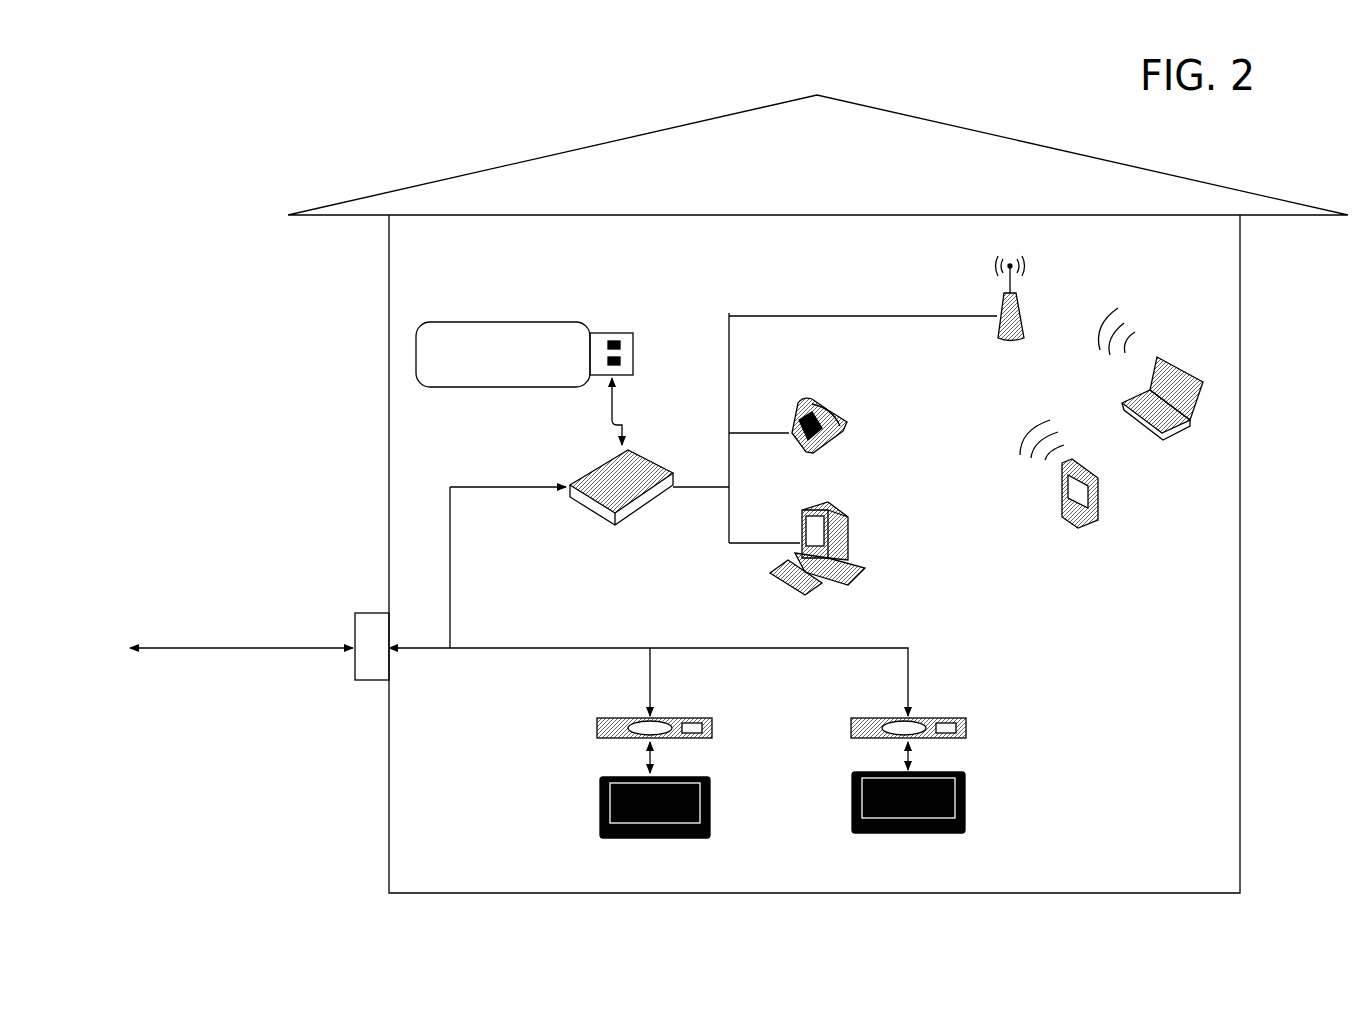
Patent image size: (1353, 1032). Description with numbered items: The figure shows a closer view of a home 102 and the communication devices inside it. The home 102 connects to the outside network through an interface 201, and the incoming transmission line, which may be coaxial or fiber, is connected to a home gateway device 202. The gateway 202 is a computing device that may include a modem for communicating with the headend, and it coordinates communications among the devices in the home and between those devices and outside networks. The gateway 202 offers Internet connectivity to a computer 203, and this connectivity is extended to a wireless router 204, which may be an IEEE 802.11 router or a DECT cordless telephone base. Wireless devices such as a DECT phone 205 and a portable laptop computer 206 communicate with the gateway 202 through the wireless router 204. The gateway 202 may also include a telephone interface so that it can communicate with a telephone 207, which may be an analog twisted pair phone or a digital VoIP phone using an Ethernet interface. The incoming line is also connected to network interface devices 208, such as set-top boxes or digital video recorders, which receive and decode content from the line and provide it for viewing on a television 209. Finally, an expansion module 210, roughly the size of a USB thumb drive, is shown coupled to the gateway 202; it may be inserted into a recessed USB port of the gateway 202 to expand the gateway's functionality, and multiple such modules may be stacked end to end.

The home 102 is at (843, 92).
The interface 201 is at (355, 613).
The home gateway device 202 is at (568, 540).
The computer 203 is at (817, 552).
The wireless router 204 is at (1026, 316).
The DECT phone 205 is at (1062, 535).
The portable laptop computer 206 is at (1143, 433).
The telephone 207 is at (848, 428).
The network interface device 208 is at (715, 738).
The television 209 is at (713, 805).
The expansion module 210 is at (524, 383).